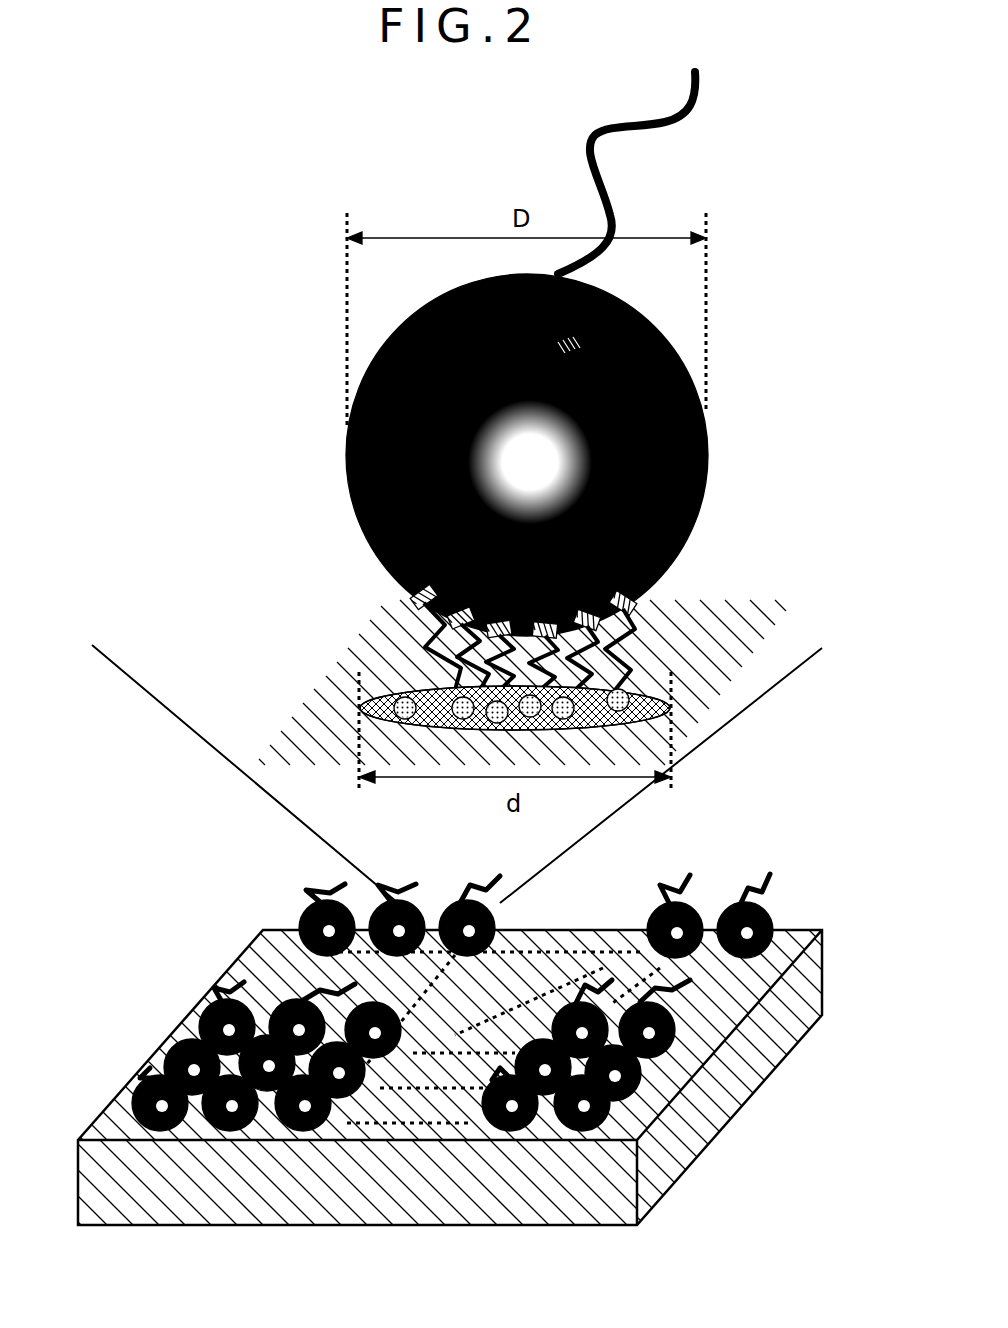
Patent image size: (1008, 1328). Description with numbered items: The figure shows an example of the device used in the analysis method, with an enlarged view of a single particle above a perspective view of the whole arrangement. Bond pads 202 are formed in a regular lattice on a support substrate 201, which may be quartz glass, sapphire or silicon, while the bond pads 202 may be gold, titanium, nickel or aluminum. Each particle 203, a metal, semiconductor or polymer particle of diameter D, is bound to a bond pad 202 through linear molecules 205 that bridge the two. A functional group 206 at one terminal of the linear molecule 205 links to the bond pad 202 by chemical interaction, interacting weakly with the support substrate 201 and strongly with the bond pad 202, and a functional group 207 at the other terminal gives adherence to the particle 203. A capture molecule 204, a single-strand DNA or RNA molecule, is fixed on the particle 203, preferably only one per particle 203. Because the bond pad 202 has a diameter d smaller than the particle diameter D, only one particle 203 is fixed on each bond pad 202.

The support substrate 201 is at (320, 722).
The bond pad 202 is at (638, 703).
The particle 203 is at (383, 484).
The capture molecule 204 is at (665, 124).
The linear molecule 205 is at (453, 657).
The functional group 206 is at (387, 693).
The functional group 207 is at (418, 595).